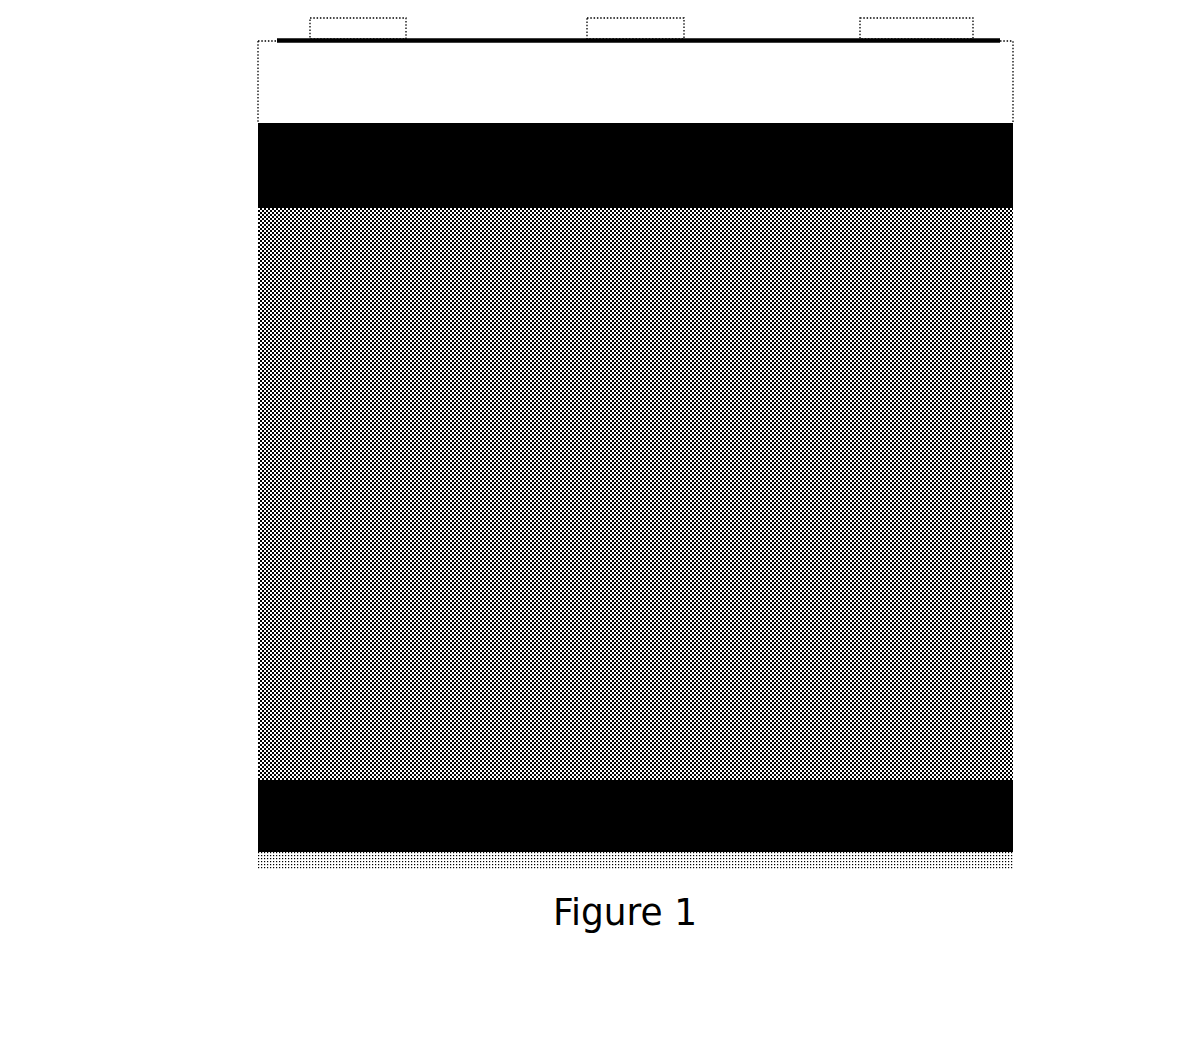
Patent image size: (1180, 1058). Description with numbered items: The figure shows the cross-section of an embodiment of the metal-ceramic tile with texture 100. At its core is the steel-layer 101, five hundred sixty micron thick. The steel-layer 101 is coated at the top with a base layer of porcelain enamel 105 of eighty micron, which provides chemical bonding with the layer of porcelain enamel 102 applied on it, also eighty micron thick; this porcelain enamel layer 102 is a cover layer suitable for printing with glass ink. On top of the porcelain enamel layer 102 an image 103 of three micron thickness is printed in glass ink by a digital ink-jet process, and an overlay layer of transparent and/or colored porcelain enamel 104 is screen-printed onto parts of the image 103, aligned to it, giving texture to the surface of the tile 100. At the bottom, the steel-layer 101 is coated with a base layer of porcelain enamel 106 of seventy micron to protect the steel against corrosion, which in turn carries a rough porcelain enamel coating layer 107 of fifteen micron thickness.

The metal-ceramic tile with texture 100 is at (653, 441).
The steel-layer 101 is at (1013, 482).
The layer of porcelain enamel 102 is at (1013, 83).
The image 103 is at (1000, 41).
The overlay layer of transparent and/or colored porcelain enamel 104 is at (973, 30).
The base layer of porcelain enamel 105 is at (1013, 172).
The base layer of porcelain enamel 106 is at (1013, 823).
The rough porcelain enamel coating layer 107 is at (1013, 860).